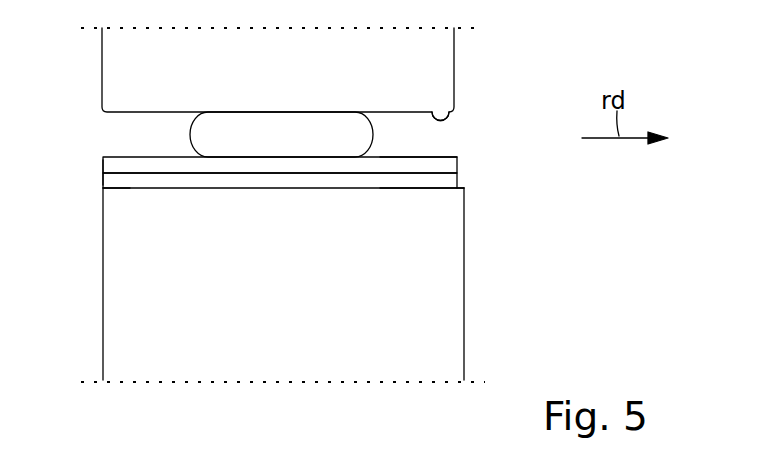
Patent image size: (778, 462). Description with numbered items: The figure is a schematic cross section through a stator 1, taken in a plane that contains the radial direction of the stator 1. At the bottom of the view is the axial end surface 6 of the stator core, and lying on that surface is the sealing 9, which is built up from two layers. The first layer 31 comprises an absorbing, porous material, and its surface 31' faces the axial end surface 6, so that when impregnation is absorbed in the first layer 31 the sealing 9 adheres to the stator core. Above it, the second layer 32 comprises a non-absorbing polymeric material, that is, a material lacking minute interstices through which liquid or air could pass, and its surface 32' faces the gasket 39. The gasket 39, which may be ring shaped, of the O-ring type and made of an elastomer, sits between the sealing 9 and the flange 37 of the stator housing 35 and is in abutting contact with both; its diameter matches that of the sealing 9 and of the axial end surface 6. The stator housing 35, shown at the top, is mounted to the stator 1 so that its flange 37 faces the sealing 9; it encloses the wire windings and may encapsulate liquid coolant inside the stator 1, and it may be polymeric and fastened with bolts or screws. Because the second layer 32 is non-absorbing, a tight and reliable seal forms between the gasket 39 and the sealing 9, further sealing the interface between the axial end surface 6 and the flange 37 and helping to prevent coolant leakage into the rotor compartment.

The stator 1 is at (438, 275).
The axial end surface 6 is at (103, 188).
The sealing 9 is at (90, 172).
The first layer 31 is at (316, 187).
The surface of the first layer 31' is at (459, 217).
The second layer 32 is at (316, 159).
The surface of the second layer 32' is at (459, 132).
The stator housing 35 is at (435, 50).
The flange 37 is at (449, 114).
The gasket 39 is at (203, 134).